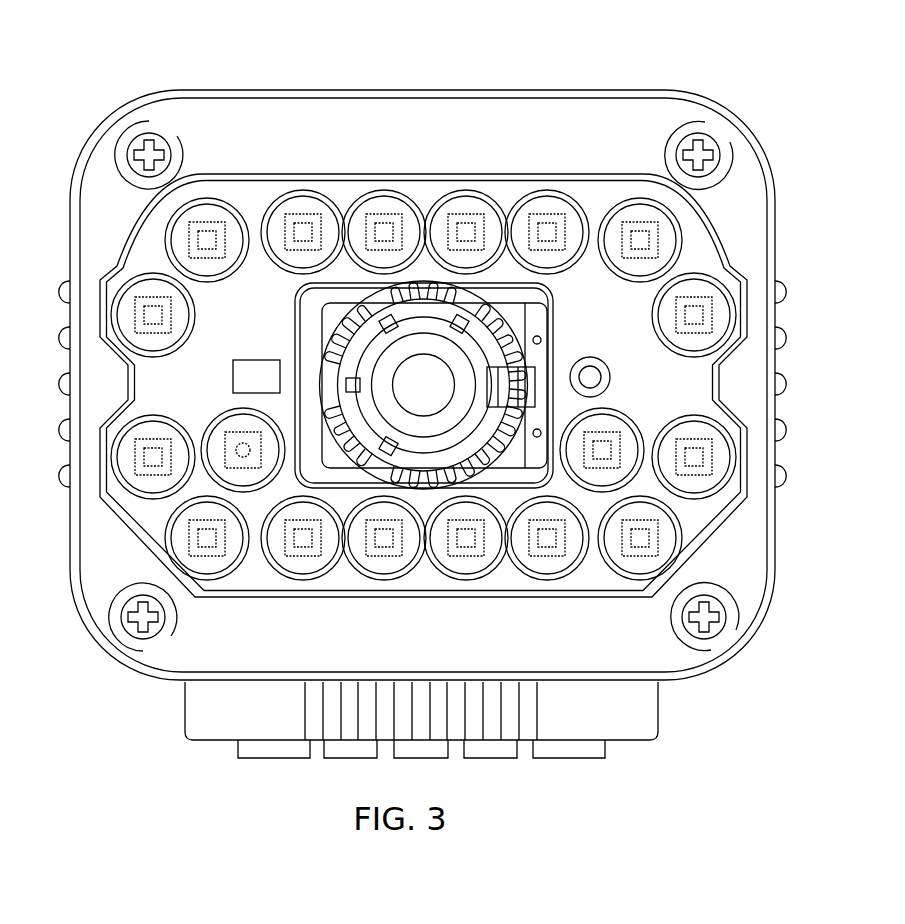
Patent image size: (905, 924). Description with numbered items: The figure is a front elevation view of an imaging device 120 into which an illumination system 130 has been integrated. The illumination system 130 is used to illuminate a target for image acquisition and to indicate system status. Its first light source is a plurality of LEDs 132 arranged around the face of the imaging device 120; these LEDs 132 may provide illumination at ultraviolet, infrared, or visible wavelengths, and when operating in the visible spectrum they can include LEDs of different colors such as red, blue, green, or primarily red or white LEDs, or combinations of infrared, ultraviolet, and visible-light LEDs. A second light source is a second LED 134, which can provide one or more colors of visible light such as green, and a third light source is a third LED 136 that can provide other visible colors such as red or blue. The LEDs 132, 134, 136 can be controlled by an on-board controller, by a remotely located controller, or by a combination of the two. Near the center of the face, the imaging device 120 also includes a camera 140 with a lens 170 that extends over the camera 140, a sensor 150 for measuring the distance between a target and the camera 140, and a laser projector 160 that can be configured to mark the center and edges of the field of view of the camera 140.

The imaging device 120 is at (286, 92).
The illumination system 130 is at (528, 90).
The plurality of LEDs 132 is at (153, 287).
The second LED 134 is at (220, 440).
The third LED 136 is at (630, 440).
The camera 140 is at (435, 378).
The sensor 150 is at (268, 360).
The laser projector 160 is at (584, 360).
The lens 170 is at (295, 302).